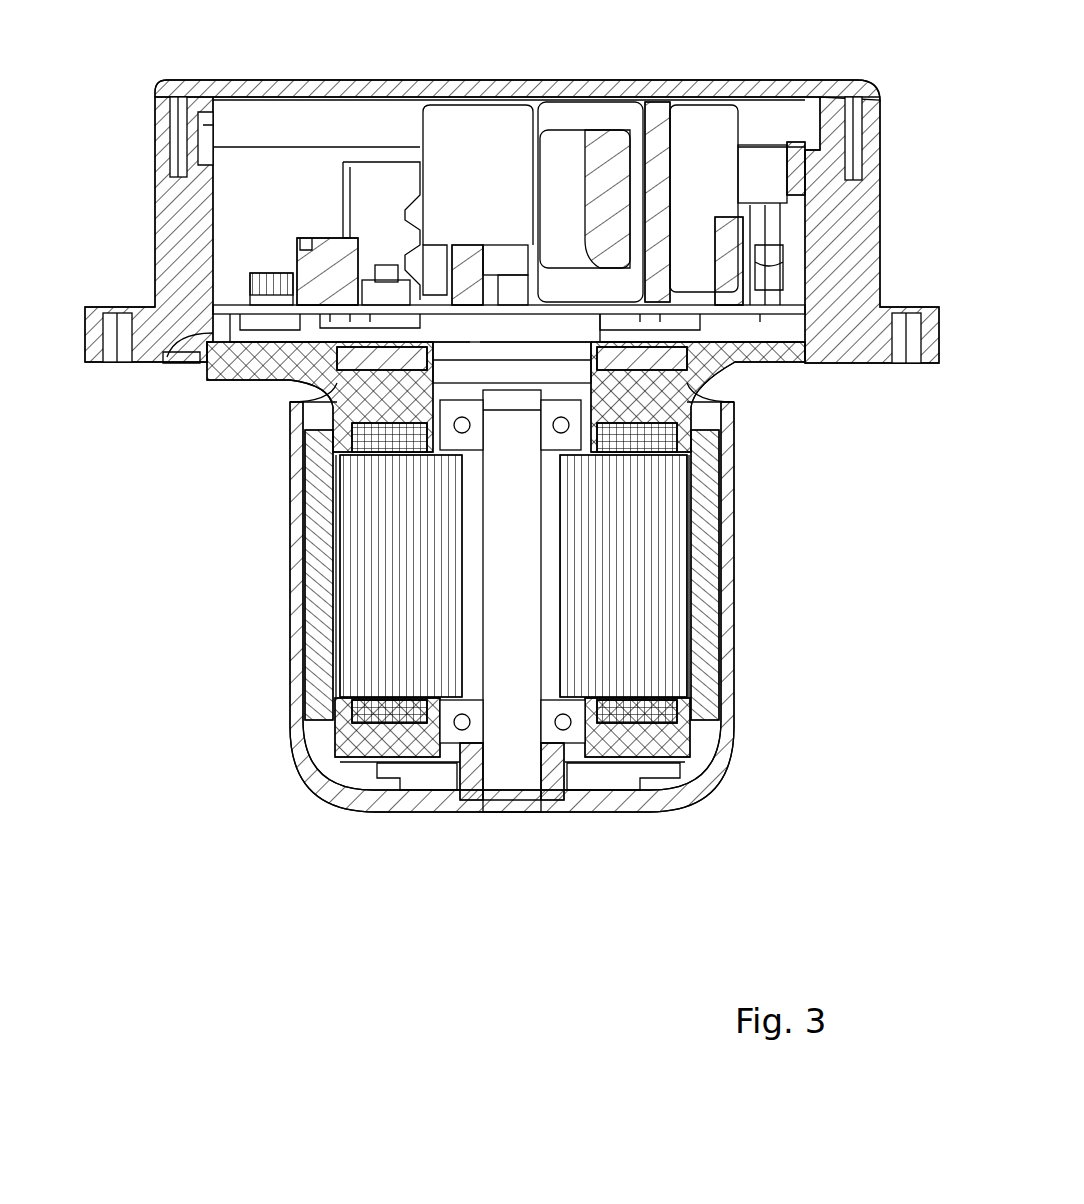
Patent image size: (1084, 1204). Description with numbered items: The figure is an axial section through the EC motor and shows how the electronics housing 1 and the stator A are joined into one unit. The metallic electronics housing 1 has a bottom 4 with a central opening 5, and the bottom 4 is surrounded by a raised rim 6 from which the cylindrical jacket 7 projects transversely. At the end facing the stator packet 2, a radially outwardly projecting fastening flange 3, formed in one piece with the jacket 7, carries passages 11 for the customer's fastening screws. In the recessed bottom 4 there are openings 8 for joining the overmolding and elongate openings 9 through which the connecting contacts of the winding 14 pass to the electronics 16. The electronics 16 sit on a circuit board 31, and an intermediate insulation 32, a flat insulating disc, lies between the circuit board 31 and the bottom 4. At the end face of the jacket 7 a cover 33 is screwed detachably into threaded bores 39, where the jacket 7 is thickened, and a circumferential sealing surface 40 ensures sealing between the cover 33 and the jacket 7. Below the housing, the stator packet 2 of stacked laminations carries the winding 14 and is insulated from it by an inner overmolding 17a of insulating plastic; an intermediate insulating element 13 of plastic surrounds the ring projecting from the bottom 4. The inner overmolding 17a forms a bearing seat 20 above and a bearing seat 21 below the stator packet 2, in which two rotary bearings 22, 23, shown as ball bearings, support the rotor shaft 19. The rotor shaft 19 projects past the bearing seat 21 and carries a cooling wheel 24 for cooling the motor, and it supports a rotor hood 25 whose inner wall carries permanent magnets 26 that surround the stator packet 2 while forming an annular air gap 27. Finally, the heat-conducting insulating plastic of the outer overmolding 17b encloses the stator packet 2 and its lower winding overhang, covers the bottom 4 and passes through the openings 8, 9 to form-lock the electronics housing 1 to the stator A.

The electronics housing 1 is at (882, 180).
The stator packet 2 is at (495, 658).
The fastening flange 3 is at (484, 388).
The bottom 4 is at (205, 363).
The central opening 5 is at (455, 375).
The raised rim 6 is at (172, 363).
The jacket 7 is at (489, 239).
The openings 8 is at (253, 380).
The openings for passing through contacts 9 is at (735, 383).
The passages 11 is at (95, 337).
The intermediate insulating element 13 is at (340, 445).
The winding 14 is at (330, 530).
The electronics 16 is at (293, 308).
The inner overmolding 17a is at (700, 510).
The outer overmolding 17b is at (700, 385).
The rotor shaft 19 is at (510, 730).
The bearing seat 20 is at (482, 588).
The bearing seat 21 is at (398, 793).
The rotary bearing 22 is at (680, 563).
The rotary bearing 23 is at (553, 783).
The cooling wheel 24 is at (600, 780).
The rotor hood 25 is at (725, 687).
The permanent magnets 26 is at (703, 723).
The annular air gap 27 is at (713, 667).
The circuit board 31 is at (297, 317).
The intermediate insulation 32 is at (750, 327).
The cover 33 is at (293, 86).
The threaded bores 39 is at (182, 158).
The sealing surface 40 is at (200, 117).
The stator A is at (790, 383).